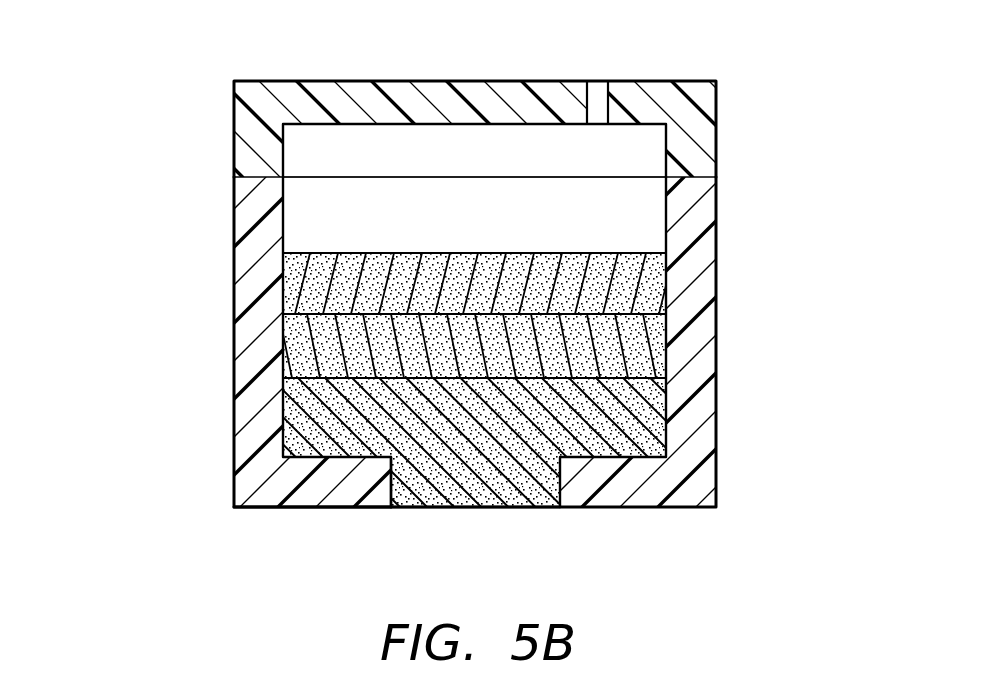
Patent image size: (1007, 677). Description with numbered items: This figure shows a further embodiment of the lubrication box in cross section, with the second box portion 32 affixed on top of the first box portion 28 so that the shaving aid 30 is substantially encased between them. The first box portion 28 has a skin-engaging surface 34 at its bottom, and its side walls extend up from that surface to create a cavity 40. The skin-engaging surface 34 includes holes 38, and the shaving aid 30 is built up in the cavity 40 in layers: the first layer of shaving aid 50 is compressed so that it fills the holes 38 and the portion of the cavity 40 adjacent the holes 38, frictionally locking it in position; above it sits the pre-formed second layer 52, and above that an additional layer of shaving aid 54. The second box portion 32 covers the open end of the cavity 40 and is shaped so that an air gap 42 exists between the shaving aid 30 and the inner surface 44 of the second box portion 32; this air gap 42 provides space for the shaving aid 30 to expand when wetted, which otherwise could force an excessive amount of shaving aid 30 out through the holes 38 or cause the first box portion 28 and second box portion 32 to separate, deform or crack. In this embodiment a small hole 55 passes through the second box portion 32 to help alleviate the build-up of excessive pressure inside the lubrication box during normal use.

The first box portion 28 is at (234, 454).
The shaving aid 30 is at (532, 401).
The second box portion 32 is at (716, 95).
The skin-engaging surface 34 is at (334, 508).
The holes 38 is at (400, 486).
The cavity 40 is at (651, 226).
The air gap 42 is at (324, 162).
The inner surface 44 is at (614, 128).
The first layer of shaving aid 50 is at (492, 478).
The second layer 52 is at (636, 374).
The additional layer of shaving aid 54 is at (648, 288).
The small hole 55 is at (597, 81).